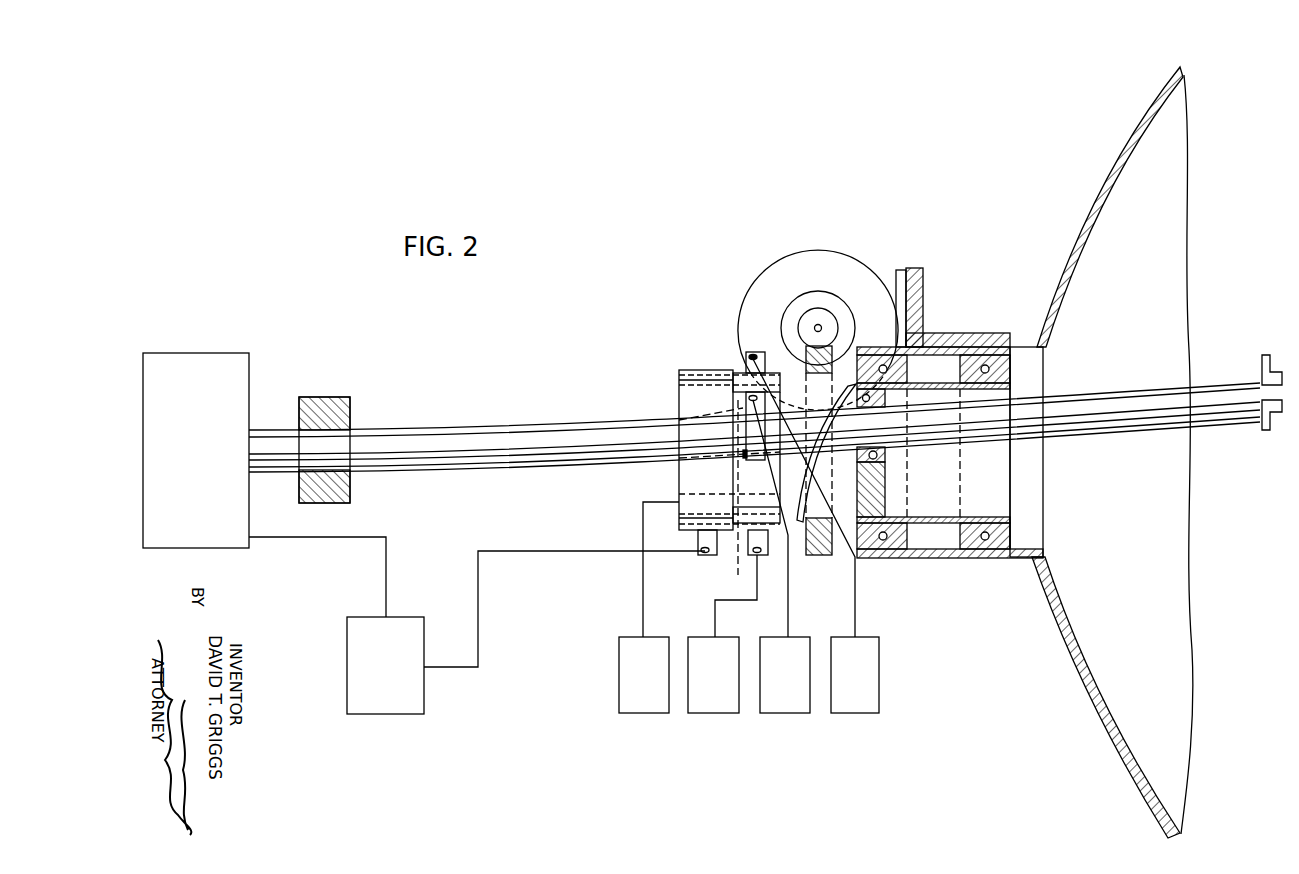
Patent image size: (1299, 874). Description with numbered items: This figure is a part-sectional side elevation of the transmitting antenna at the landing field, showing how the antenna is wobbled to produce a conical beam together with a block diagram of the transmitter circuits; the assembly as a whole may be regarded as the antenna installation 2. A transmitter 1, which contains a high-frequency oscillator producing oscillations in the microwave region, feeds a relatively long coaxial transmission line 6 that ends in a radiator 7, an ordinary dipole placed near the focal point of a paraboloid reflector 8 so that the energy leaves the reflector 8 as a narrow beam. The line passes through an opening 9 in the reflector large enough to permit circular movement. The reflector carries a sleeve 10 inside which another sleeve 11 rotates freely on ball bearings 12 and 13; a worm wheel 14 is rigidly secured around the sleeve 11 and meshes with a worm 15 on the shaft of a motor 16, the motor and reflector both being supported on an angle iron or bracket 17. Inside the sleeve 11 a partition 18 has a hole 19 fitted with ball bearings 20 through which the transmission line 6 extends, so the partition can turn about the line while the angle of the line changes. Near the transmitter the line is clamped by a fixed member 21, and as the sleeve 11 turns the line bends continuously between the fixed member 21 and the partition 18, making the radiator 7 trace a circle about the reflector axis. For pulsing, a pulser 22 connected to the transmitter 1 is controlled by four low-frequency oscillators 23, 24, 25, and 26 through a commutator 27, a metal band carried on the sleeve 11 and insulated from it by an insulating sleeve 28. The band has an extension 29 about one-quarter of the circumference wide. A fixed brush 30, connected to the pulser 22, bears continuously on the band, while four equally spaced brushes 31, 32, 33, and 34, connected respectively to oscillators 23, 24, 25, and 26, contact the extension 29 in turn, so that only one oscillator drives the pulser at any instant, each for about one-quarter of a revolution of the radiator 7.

The transmitter 1 is at (243, 360).
The hull 2 is at (1124, 136).
The transmission line 6 is at (474, 428).
The radiator 7 is at (1262, 370).
The reflector 8 is at (1093, 200).
The opening 9 is at (1038, 522).
The sleeve 10 is at (920, 558).
The sleeve 11 is at (948, 523).
The ball bearing 12 is at (985, 347).
The ball bearing 13 is at (878, 556).
The worm wheel 14 is at (832, 320).
The worm 15 is at (806, 320).
The motor 16 is at (820, 270).
The bracket 17 is at (924, 292).
The partition 18 is at (888, 483).
The hole 19 is at (885, 455).
The ball bearings 20 is at (828, 453).
The fixed member 21 is at (333, 402).
The pulser 22 is at (412, 620).
The oscillator 23 is at (645, 713).
The oscillator 24 is at (716, 713).
The oscillator 25 is at (789, 713).
The oscillator 26 is at (857, 713).
The commutator 27 is at (690, 400).
The insulating sleeve 28 is at (725, 380).
The extension 29 is at (725, 472).
The brush 30 is at (720, 545).
The brush 31 is at (740, 499).
The brush 32 is at (768, 545).
The brush 33 is at (752, 430).
The brush 34 is at (749, 352).